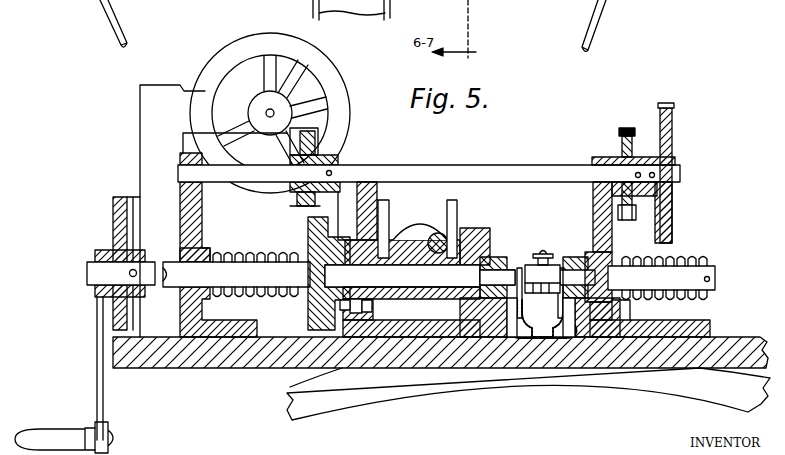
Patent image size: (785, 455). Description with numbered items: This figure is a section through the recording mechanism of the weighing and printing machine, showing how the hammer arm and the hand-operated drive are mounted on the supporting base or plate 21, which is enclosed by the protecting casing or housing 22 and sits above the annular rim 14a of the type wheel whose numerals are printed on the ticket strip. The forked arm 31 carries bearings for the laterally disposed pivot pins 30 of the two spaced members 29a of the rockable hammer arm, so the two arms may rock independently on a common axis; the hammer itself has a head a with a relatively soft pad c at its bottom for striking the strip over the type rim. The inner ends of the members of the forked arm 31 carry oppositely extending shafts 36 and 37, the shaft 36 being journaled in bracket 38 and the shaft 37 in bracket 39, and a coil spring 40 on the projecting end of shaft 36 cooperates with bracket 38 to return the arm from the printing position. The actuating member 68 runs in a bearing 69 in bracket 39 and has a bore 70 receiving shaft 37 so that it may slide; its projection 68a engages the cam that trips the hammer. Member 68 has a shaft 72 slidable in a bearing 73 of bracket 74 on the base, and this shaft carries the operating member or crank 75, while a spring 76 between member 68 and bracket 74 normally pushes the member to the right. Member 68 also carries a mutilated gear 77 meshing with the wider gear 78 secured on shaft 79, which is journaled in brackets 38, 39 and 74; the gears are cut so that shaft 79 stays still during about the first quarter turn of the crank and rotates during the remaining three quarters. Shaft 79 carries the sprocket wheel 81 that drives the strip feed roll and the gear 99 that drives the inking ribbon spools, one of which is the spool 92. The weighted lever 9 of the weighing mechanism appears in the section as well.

The supporting base or plate 21 is at (697, 352).
The annular rim 14a is at (289, 387).
The operating member or crank 75 is at (95, 365).
The protecting casing or housing 22 is at (112, 215).
The bracket 74 is at (180, 213).
The ribbon spool 92 is at (240, 42).
The wider gear 78 is at (296, 205).
The shaft 79 is at (442, 172).
The bearing 73 is at (203, 256).
The shaft 72 is at (220, 278).
The spring 76 is at (258, 297).
The gear 77 is at (308, 233).
The projection 68a is at (394, 256).
The bracket 39 is at (465, 228).
The shaft 37 is at (420, 276).
The bore 70 is at (358, 310).
The actuating member 68 is at (342, 302).
The bearing 69 is at (368, 310).
The pivot pins 30 is at (495, 280).
The spaced members 29a is at (540, 256).
The weighted lever 9 is at (541, 215).
The soft pad c is at (517, 325).
The head a is at (543, 320).
The forked arm 31 is at (540, 317).
The bracket 38 is at (613, 243).
The sprocket wheel 81 is at (630, 130).
The gear 99 is at (673, 127).
The shaft 36 is at (661, 278).
The coil spring 40 is at (690, 258).